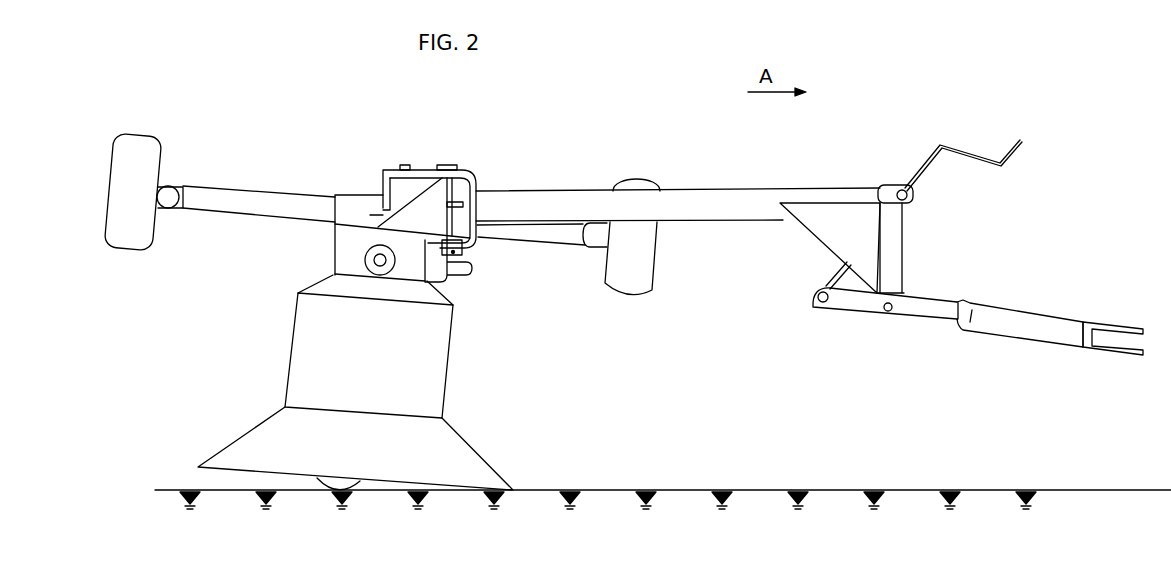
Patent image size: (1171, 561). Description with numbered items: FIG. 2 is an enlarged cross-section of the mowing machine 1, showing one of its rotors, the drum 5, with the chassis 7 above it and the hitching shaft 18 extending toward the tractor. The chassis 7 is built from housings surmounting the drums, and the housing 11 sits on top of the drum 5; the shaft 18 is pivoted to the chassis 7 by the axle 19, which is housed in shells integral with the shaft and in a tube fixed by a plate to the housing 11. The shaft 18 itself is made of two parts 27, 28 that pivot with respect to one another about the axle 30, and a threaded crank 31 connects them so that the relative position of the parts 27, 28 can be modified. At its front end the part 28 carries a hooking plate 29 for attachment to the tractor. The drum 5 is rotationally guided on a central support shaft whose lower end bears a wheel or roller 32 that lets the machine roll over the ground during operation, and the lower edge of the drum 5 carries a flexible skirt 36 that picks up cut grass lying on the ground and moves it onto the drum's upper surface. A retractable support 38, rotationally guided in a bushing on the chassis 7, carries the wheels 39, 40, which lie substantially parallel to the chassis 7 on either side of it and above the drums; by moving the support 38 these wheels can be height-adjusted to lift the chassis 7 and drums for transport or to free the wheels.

The implement 1 is at (278, 338).
The drum 5 is at (450, 370).
The chassis 7 is at (322, 268).
The housing 11 is at (337, 245).
The shaft 18 is at (815, 185).
The axle 19 is at (452, 168).
The part of shaft 27 is at (718, 196).
The part of shaft 28 is at (1000, 332).
The hooking plate 29 is at (1098, 353).
The axle 30 is at (883, 312).
The threaded crank 31 is at (942, 145).
The wheel or roller 32 is at (325, 491).
The flexible skirt 36 is at (462, 450).
The retractable support 38 is at (235, 195).
The wheel 39 is at (138, 145).
The wheel 40 is at (626, 183).